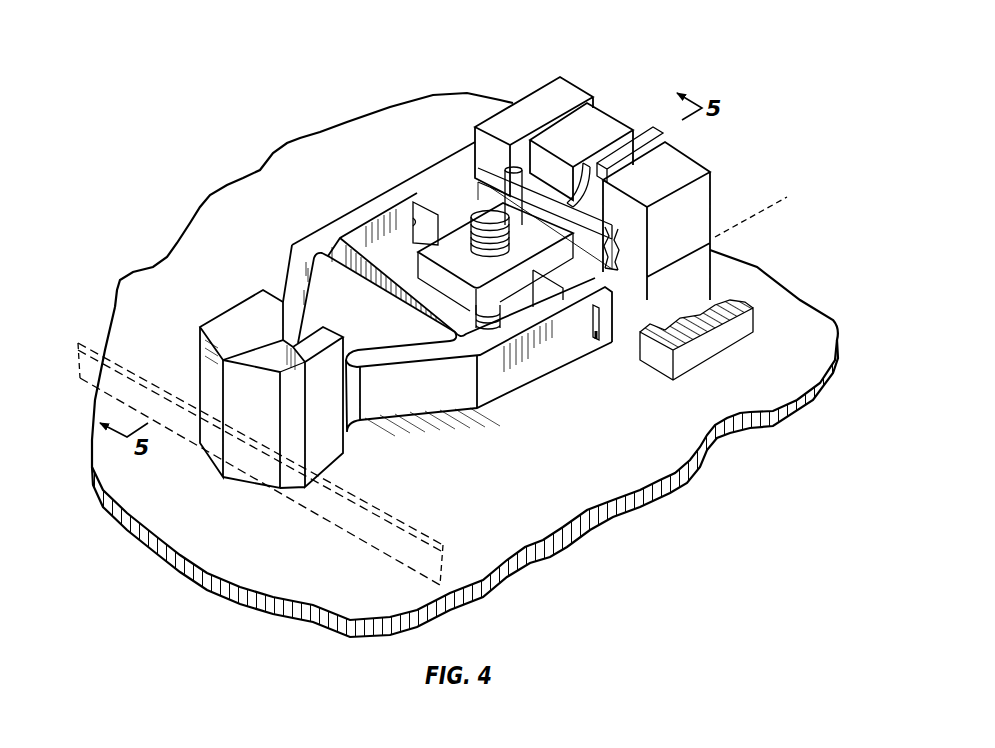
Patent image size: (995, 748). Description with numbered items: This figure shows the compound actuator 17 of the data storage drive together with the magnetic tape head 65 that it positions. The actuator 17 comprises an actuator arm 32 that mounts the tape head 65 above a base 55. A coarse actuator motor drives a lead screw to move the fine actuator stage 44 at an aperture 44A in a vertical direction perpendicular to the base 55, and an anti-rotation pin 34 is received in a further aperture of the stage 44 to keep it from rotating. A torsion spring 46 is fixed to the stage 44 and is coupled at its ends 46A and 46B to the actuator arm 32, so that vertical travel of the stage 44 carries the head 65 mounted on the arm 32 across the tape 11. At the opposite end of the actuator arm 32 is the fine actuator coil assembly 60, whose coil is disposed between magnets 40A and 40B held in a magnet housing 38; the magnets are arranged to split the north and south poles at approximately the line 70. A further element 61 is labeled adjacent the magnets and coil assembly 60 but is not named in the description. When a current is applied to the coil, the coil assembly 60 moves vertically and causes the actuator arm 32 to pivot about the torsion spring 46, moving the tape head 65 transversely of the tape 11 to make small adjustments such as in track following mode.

The tape 11 is at (340, 530).
The compound actuator 17 is at (610, 78).
The actuator arm 32 is at (410, 177).
The anti-rotation pin 34 is at (500, 177).
The magnet housing 38 is at (553, 92).
The magnet 40A is at (656, 221).
The magnet 40B is at (581, 151).
The fine actuator stage 44 is at (495, 266).
The aperture 44A is at (585, 216).
The torsion spring 46 is at (547, 297).
The end of torsion spring 46A is at (598, 342).
The end of torsion spring 46B is at (408, 227).
The base 55 is at (703, 467).
The fine actuator coil assembly 60 is at (678, 140).
The lead bar 61 is at (647, 128).
The magnetic tape head 65 is at (250, 304).
The line 70 is at (757, 217).